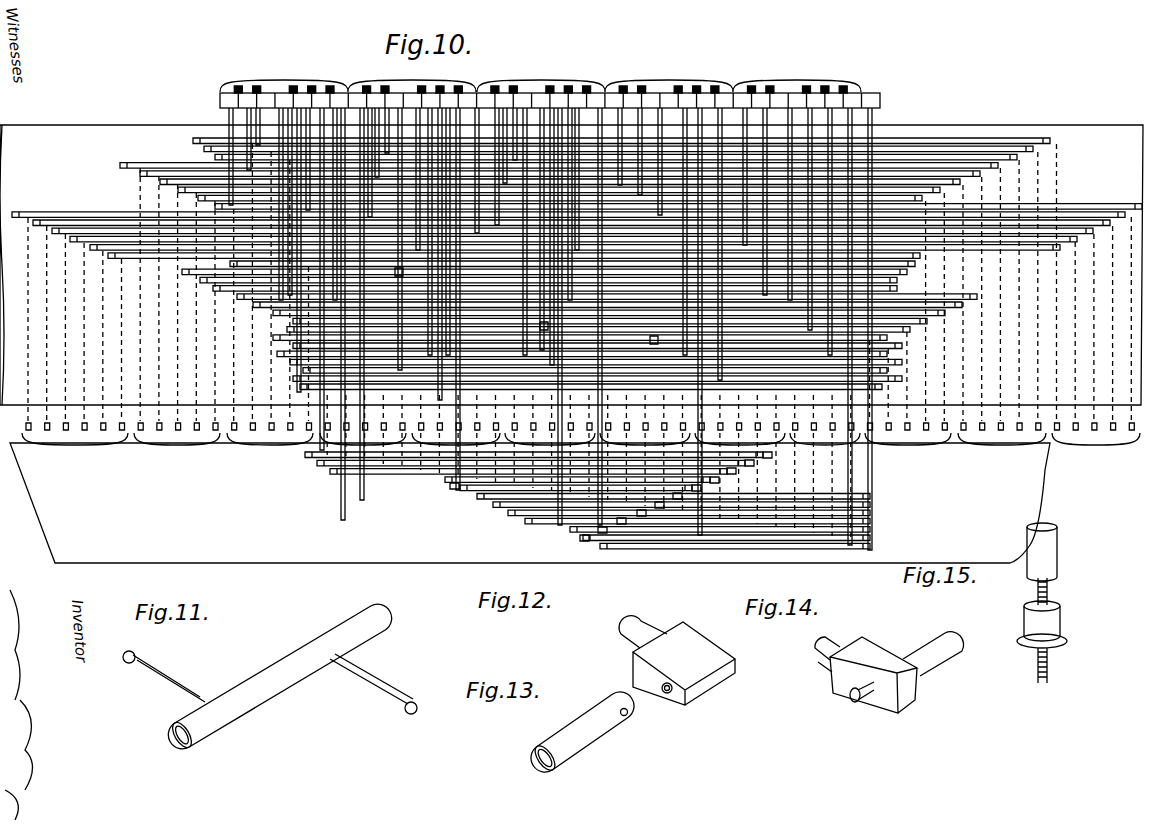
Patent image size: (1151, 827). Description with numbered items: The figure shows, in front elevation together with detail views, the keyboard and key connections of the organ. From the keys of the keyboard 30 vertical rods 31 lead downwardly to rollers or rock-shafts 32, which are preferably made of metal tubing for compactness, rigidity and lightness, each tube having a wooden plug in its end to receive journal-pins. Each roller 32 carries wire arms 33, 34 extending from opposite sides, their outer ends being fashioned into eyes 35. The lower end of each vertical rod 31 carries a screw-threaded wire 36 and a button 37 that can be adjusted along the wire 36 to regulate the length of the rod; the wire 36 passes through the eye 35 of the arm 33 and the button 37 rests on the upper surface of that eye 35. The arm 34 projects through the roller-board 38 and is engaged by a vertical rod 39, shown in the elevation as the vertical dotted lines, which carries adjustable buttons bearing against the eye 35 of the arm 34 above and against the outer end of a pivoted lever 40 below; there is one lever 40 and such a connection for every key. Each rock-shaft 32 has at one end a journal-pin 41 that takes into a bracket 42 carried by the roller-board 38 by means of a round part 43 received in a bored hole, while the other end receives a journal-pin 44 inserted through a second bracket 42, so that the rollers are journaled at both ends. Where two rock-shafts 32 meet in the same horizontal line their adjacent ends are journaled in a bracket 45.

In FIG. 10, the keyboard 30 is at (551, 83).
In FIG. 10, the vertical rods 31 is at (310, 228).
In FIG. 15, the vertical rods 31 is at (1042, 552).
In FIG. 10, the rollers or rock-shafts 32 is at (925, 274).
In FIG. 11, the rollers or rock-shafts 32 is at (160, 750).
In FIG. 13, the rollers or rock-shafts 32 is at (525, 770).
In FIG. 14, the rollers or rock-shafts 32 is at (933, 654).
In FIG. 11, the arm 33 is at (364, 682).
In FIG. 11, the arm 34 is at (160, 680).
In FIG. 11, the eyes 35 is at (126, 663).
In FIG. 15, the eyes 35 is at (1066, 643).
In FIG. 15, the screw-threaded wire 36 is at (1050, 600).
In FIG. 15, the button 37 is at (1035, 625).
In FIG. 10, the roller-board 38 is at (571, 344).
In FIG. 10, the vertical rod 39 is at (190, 342).
In FIG. 10, the pivoted lever 40 is at (86, 432).
In FIG. 13, the journal-pin 41 is at (628, 713).
In FIG. 10, the brackets 42 is at (205, 153).
In FIG. 14, the brackets 42 is at (873, 675).
In FIG. 14, the round part 43 is at (820, 666).
In FIG. 14, the journal-pins 44 is at (857, 703).
In FIG. 10, the brackets 45 is at (509, 312).
In FIG. 12, the brackets 45 is at (677, 660).